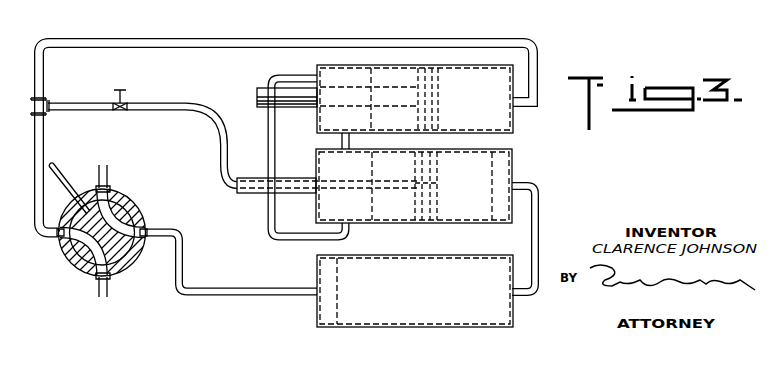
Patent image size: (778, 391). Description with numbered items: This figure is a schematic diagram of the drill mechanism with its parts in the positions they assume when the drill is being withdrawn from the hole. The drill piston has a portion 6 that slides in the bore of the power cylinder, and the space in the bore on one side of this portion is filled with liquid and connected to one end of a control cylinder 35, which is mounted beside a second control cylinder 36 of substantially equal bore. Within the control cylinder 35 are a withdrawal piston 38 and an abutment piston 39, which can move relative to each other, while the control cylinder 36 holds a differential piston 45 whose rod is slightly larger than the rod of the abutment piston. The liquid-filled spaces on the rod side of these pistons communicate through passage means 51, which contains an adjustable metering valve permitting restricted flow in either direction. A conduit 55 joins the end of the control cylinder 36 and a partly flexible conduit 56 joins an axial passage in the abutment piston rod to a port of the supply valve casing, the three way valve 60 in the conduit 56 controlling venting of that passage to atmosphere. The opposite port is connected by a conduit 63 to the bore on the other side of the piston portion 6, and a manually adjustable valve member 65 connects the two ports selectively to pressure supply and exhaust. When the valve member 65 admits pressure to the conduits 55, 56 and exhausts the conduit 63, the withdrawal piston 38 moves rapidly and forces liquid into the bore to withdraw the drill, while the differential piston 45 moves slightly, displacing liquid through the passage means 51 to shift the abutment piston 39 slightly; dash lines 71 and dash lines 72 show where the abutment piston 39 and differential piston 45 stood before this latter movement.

The piston portion 6 is at (338, 285).
The control cylinder 35 is at (463, 224).
The control cylinder 36 is at (405, 65).
The withdrawal piston 38 is at (498, 194).
The abutment piston 39 is at (434, 172).
The differential piston 45 is at (433, 103).
The passage means 51 is at (275, 160).
The conduit 55 is at (218, 42).
The conduit 56 is at (216, 134).
The three way valve 60 is at (126, 97).
The conduit 63 is at (245, 290).
The valve member 65 is at (140, 213).
The dash lines 71 is at (417, 220).
The dash lines 72 is at (436, 68).